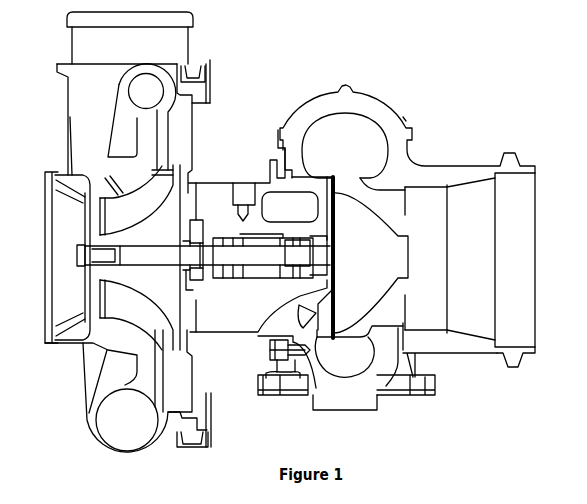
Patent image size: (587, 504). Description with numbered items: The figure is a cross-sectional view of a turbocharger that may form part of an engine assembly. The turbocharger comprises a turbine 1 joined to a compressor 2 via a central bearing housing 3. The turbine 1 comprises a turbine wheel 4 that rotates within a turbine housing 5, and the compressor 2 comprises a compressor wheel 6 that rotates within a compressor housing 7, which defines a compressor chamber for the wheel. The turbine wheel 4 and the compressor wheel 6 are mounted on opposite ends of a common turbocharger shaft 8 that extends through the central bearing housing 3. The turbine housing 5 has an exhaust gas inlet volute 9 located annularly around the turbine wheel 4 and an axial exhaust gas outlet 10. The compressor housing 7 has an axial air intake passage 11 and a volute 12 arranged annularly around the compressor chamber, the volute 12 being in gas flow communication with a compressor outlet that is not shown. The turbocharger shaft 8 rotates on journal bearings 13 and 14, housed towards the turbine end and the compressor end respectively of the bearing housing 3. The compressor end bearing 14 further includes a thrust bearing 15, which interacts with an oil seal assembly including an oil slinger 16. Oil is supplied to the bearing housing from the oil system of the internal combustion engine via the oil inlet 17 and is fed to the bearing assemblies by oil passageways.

The turbine 1 is at (486, 137).
The compressor 2 is at (60, 379).
The central bearing housing 3 is at (217, 183).
The turbine wheel 4 is at (351, 289).
The turbine housing 5 is at (481, 347).
The compressor wheel 6 is at (107, 272).
The compressor housing 7 is at (110, 160).
The turbocharger shaft 8 is at (255, 280).
The exhaust gas inlet volute 9 is at (352, 125).
The axial exhaust gas outlet 10 is at (483, 241).
The axial air intake passage 11 is at (58, 229).
The volute 12 is at (158, 84).
The journal bearing 13 is at (287, 237).
The journal bearing 14 is at (212, 238).
The thrust bearing 15 is at (192, 193).
The oil slinger 16 is at (189, 268).
The oil inlet 17 is at (243, 187).